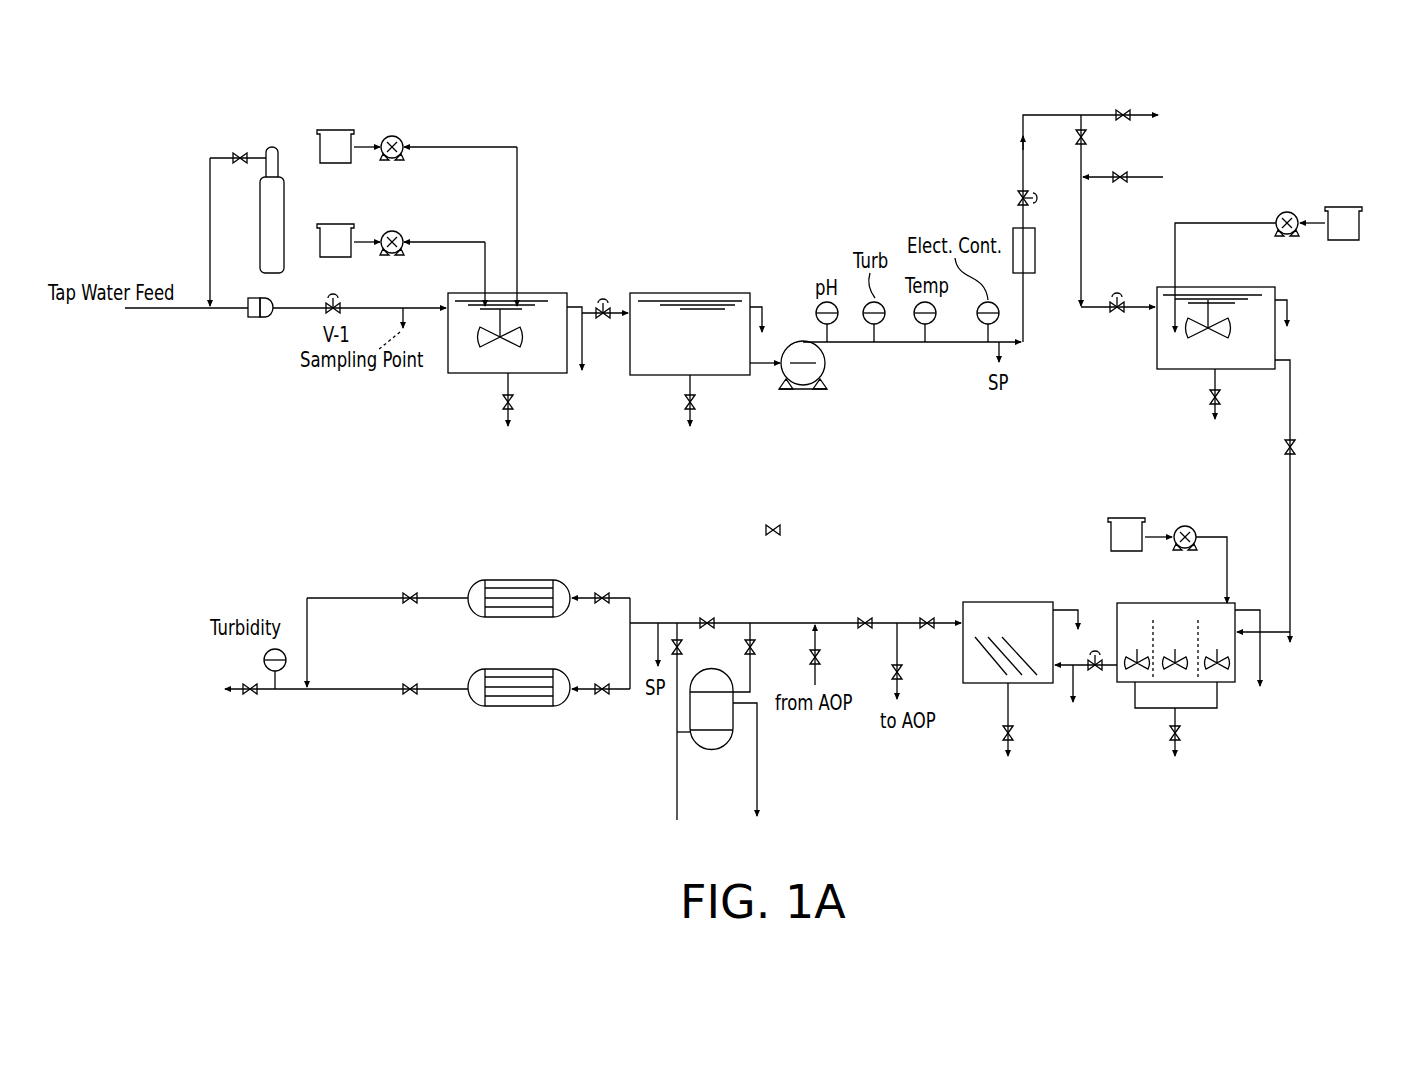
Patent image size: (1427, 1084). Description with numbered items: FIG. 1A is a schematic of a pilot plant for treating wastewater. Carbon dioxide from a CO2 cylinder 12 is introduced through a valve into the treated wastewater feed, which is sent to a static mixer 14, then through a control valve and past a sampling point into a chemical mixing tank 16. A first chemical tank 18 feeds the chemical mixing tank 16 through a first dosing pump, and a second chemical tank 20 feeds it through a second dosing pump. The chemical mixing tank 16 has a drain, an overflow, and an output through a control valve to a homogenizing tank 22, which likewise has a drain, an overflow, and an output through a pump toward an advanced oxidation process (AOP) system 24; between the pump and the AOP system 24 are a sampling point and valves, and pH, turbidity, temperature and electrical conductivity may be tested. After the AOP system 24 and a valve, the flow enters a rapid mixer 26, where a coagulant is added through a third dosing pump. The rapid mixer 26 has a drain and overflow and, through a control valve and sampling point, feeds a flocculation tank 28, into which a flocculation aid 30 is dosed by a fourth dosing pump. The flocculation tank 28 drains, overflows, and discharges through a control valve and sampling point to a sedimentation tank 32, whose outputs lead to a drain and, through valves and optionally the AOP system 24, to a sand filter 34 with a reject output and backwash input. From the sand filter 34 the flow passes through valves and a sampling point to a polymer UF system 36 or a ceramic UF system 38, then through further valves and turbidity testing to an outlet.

The CO2 cylinder 12 is at (257, 207).
The static mixer 14 is at (270, 318).
The chemical mixing tank 16 is at (533, 375).
The first chemical tank 18 is at (404, 141).
The second chemical tank 20 is at (407, 240).
The homogenizing tank 22 is at (723, 377).
The advanced oxidation process (AOP) system 24 is at (1262, 113).
The rapid mixer 26 is at (1157, 370).
The flocculation tank 28 is at (1230, 685).
The flocculation aid 30 is at (1145, 520).
The sedimentation tank 32 is at (963, 685).
The sand filter 34 is at (733, 742).
The polymer UF system 36 is at (470, 700).
The ceramic UF system 38 is at (500, 578).